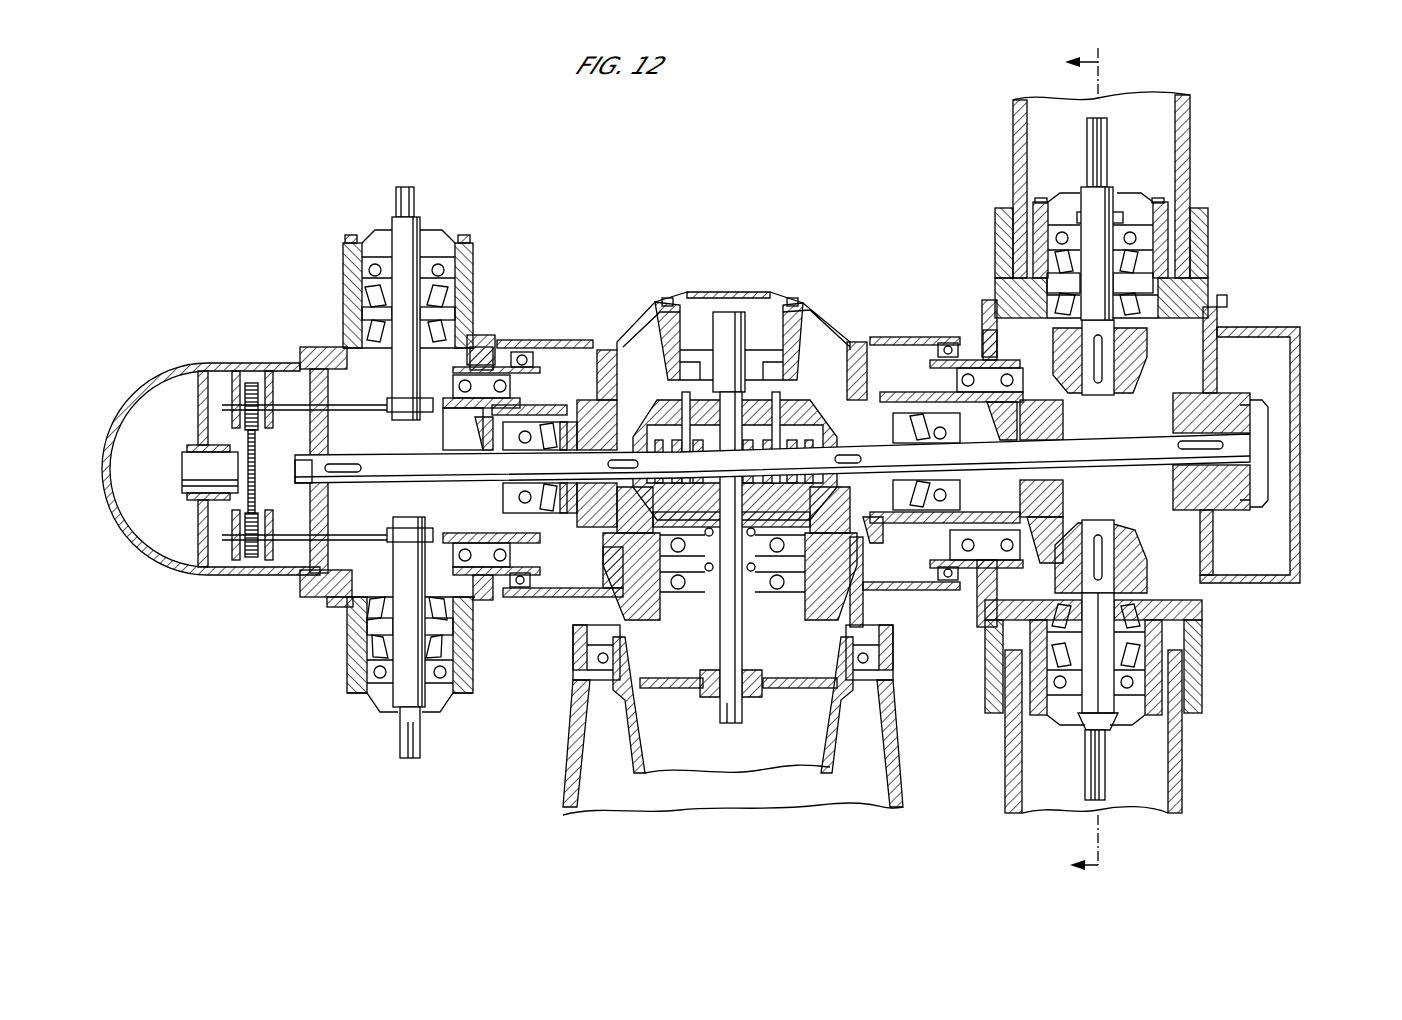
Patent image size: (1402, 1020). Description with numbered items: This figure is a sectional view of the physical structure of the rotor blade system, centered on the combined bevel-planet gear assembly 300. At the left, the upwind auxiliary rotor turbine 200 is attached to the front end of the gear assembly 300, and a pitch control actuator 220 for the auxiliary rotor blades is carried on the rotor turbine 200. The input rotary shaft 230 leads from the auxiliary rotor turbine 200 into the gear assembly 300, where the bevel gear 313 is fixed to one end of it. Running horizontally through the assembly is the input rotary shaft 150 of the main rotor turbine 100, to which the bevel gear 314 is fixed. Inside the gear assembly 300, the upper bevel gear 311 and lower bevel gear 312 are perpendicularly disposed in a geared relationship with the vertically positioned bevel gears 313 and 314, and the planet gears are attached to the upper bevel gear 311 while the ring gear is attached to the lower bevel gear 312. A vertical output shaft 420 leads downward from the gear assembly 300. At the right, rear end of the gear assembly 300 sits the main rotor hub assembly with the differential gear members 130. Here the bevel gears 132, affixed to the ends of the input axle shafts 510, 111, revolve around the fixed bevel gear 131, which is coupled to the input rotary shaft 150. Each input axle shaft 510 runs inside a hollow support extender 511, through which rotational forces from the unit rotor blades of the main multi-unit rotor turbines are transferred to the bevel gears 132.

The main rotor turbine 100 is at (1328, 585).
The input axle shaft 111 is at (1082, 795).
The differential gear members 130 is at (1176, 389).
The fixed bevel gear 131 is at (1043, 425).
The bevel gear 132 is at (1148, 350).
The input rotary shaft 150 is at (1142, 460).
The auxiliary rotor turbine 200 is at (295, 295).
The pitch control actuator 220 is at (222, 429).
The input rotary shaft 230 is at (402, 468).
The combined bevel-planet gear assembly 300 is at (758, 268).
The upper bevel gear 311 is at (658, 442).
The lower bevel gear 312 is at (637, 545).
The bevel gear 313 is at (590, 440).
The bevel gear 314 is at (847, 428).
The vertical output shaft 420 is at (743, 651).
The input axle shaft 510 is at (1087, 172).
The hollow support extender 511 is at (1190, 122).